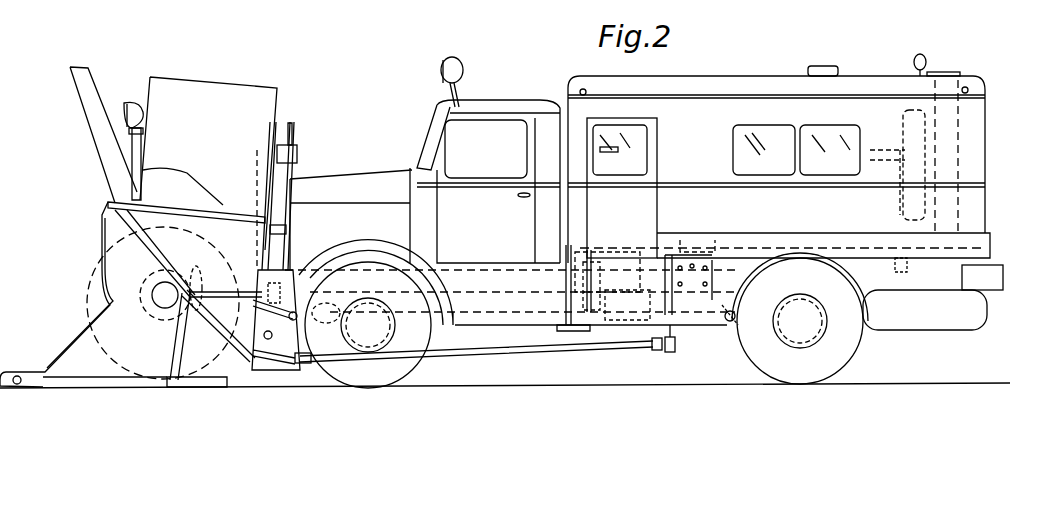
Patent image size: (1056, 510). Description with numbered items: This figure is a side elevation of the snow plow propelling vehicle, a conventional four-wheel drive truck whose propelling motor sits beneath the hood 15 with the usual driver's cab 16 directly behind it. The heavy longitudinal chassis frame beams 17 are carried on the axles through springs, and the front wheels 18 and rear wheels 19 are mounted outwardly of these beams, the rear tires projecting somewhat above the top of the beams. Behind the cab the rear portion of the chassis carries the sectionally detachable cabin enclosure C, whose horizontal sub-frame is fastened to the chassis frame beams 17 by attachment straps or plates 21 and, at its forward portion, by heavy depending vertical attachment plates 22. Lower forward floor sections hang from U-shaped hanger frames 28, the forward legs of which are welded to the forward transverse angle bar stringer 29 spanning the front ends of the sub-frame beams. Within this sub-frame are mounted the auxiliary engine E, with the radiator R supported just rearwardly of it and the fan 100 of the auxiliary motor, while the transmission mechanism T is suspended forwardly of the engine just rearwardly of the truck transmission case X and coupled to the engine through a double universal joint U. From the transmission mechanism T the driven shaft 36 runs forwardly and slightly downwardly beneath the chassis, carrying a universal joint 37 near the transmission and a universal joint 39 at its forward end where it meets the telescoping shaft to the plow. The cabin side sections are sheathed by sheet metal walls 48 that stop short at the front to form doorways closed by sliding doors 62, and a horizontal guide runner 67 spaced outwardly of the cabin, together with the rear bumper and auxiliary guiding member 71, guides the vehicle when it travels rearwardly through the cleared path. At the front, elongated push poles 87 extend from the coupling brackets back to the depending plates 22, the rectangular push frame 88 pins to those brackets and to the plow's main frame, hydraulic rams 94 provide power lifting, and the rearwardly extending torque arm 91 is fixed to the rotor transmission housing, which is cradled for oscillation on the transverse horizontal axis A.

The hood 15 is at (365, 183).
The driver's cab 16 is at (458, 153).
The chassis frame beams 17 is at (493, 272).
The front wheels 18 is at (400, 370).
The rear wheels 19 is at (843, 357).
The attachment straps or plates 21 is at (906, 266).
The depending vertical attachment plates 22 is at (690, 333).
The hanger frames 28 is at (627, 330).
The forward transverse angle bar stringer 29 is at (569, 237).
The driven shaft 36 is at (493, 307).
The universal joint 37 is at (640, 352).
The universal joint 39 is at (326, 329).
The walls 48 is at (710, 112).
The doors 62 is at (647, 180).
The guide runner 67 is at (991, 240).
The rear bumper and auxiliary guiding member 71 is at (995, 290).
The push poles 87 is at (508, 353).
The push frame 88 is at (233, 363).
The torque arm 91 is at (262, 338).
The hydraulic rams 94 is at (250, 356).
The fan 100 is at (920, 117).
The transverse horizontal axis A is at (167, 295).
The cabin enclosure C is at (875, 71).
The auxiliary engine E is at (883, 132).
The radiator R is at (957, 125).
The transmission mechanism T is at (645, 320).
The double universal joint U is at (700, 275).
The truck transmission case X is at (612, 250).